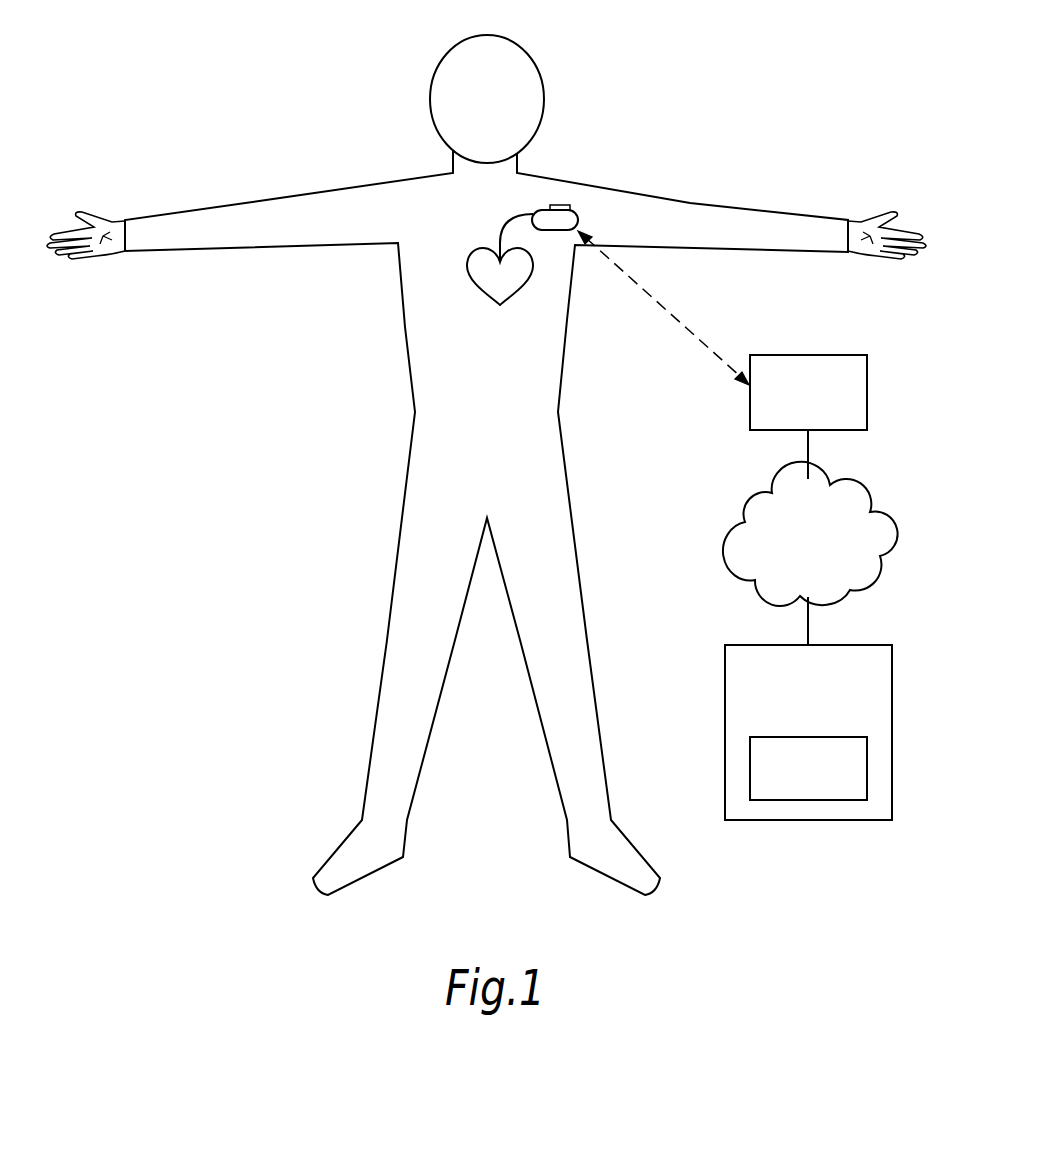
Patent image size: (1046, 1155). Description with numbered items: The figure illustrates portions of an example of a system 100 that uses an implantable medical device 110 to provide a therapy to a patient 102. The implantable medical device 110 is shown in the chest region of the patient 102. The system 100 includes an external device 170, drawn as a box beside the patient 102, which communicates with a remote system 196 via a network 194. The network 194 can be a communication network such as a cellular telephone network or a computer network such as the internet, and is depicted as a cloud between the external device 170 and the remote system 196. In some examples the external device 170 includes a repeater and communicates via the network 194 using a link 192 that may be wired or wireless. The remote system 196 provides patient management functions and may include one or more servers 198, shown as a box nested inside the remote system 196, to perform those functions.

The system 100 is at (811, 48).
The patient 102 is at (405, 329).
The implantable medical device 110 is at (558, 204).
The external device 170 is at (808, 355).
The link 192 is at (808, 455).
The network 194 is at (885, 537).
The remote system 196 is at (835, 645).
The server 198 is at (808, 737).